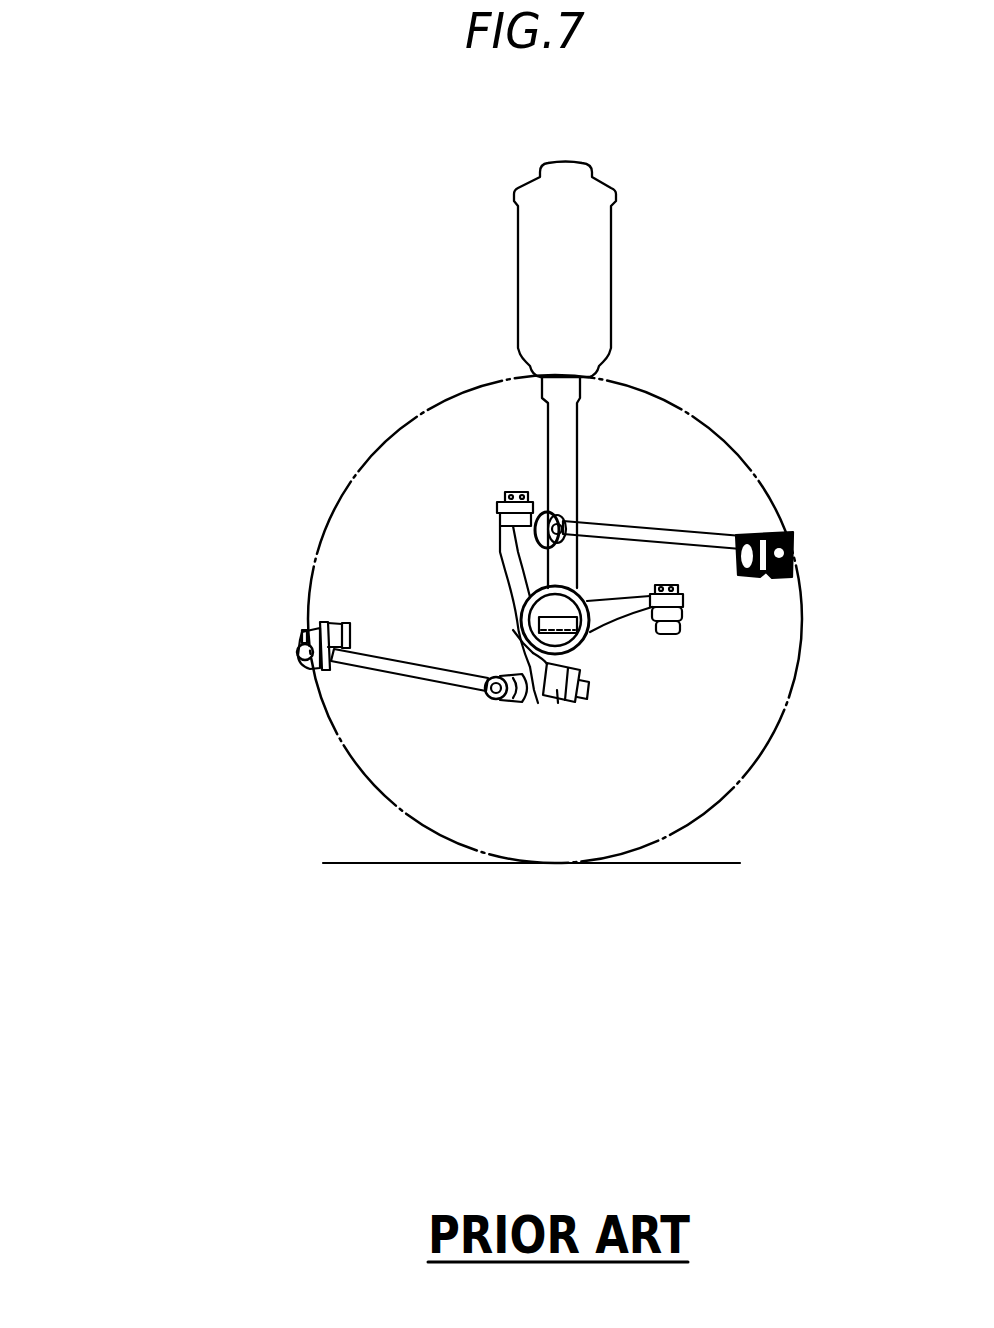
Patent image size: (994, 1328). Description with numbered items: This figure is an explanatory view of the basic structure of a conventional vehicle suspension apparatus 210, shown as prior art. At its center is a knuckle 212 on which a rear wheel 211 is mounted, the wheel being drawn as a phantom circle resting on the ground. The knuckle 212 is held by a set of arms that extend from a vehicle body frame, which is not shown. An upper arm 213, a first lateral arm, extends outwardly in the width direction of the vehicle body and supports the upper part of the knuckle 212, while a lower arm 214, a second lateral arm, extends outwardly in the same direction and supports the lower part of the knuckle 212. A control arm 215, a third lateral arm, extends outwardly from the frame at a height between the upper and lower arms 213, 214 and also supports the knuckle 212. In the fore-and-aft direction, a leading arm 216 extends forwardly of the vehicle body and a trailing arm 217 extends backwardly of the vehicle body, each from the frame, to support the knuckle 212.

The vehicle suspension apparatus 210 is at (198, 157).
The rear wheel 211 is at (713, 432).
The knuckle 212 is at (589, 622).
The upper arm 213 is at (497, 493).
The lower arm 214 is at (580, 701).
The control arm 215 is at (617, 596).
The leading arm 216 is at (415, 648).
The trailing arm 217 is at (693, 535).